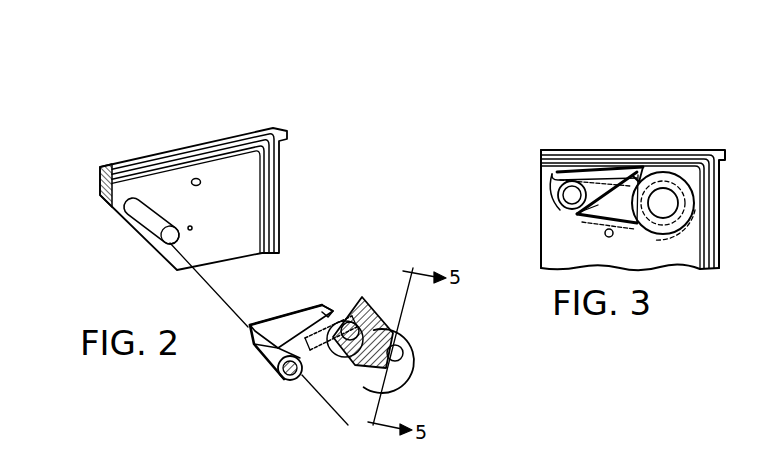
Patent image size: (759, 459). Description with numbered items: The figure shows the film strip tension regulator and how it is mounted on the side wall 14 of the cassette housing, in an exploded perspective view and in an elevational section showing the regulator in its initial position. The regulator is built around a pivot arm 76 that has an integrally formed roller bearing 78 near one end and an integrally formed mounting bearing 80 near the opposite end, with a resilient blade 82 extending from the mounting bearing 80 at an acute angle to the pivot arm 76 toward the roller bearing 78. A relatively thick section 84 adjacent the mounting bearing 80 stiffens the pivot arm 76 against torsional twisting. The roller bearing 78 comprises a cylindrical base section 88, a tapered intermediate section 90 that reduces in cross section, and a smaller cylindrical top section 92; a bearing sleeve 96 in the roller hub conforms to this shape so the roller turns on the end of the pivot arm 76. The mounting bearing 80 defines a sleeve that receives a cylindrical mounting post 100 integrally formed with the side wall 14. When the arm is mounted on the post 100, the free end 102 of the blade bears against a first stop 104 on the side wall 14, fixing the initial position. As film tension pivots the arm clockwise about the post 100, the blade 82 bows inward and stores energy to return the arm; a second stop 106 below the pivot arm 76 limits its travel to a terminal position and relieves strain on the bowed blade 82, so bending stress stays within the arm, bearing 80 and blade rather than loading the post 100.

In FIG. 2, the side wall 14 is at (256, 172).
In FIG. 3, the side wall 14 is at (693, 258).
In FIG. 2, the pivot arm 76 is at (342, 316).
In FIG. 3, the pivot arm 76 is at (623, 224).
In FIG. 2, the roller bearing 78 is at (344, 311).
In FIG. 2, the mounting bearing 80 is at (278, 367).
In FIG. 3, the mounting bearing 80 is at (562, 212).
In FIG. 2, the resilient blade 82 is at (273, 322).
In FIG. 3, the resilient blade 82 is at (589, 170).
In FIG. 2, the thick section 84 is at (306, 350).
In FIG. 3, the thick section 84 is at (597, 204).
In FIG. 2, the cylindrical base section 88 is at (362, 300).
In FIG. 2, the tapered intermediate section 90 is at (394, 330).
In FIG. 2, the cylindrical top section 92 is at (360, 372).
In FIG. 2, the bearing sleeve 96 is at (297, 380).
In FIG. 2, the mounting post 100 is at (166, 242).
In FIG. 3, the mounting post 100 is at (567, 201).
In FIG. 2, the free end 102 is at (323, 307).
In FIG. 3, the free end 102 is at (645, 167).
In FIG. 2, the first stop 104 is at (201, 182).
In FIG. 2, the second stop 106 is at (193, 228).
In FIG. 3, the second stop 106 is at (606, 237).